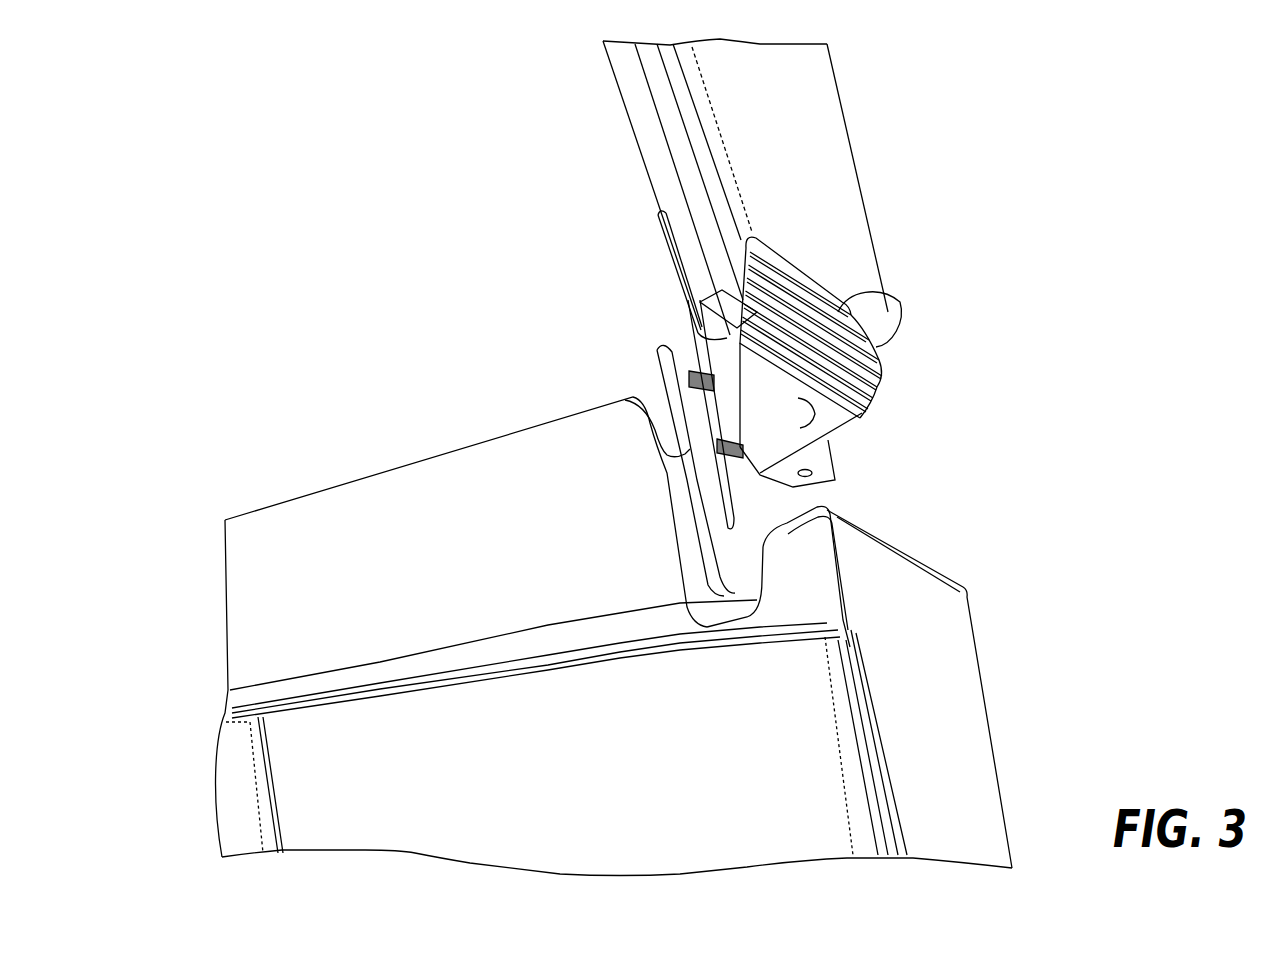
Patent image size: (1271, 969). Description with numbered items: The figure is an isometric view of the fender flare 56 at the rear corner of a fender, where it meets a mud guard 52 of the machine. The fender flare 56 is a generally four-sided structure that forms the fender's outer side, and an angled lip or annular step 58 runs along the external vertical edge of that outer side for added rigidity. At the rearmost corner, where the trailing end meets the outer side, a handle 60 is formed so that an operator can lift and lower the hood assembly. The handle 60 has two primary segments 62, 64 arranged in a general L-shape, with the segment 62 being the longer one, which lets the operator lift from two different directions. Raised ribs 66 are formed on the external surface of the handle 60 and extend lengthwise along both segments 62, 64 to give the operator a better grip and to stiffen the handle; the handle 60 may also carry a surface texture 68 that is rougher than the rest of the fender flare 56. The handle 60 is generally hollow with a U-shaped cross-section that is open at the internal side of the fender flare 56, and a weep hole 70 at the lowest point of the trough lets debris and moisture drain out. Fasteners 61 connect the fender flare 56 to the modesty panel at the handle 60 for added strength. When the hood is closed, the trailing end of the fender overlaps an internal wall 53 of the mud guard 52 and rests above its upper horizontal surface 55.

The mud guard 52 is at (1002, 650).
The internal wall 53 is at (733, 478).
The upper horizontal surface 55 is at (783, 500).
The fender flare 56 is at (936, 187).
The angled lip or annular step 58 is at (656, 150).
The handle 60 is at (924, 393).
The fasteners 61 is at (700, 372).
The segment 62 is at (834, 300).
The segment 64 is at (838, 440).
The raised ribs 66 is at (877, 397).
The surface texture 68 is at (803, 420).
The weep hole 70 is at (812, 479).